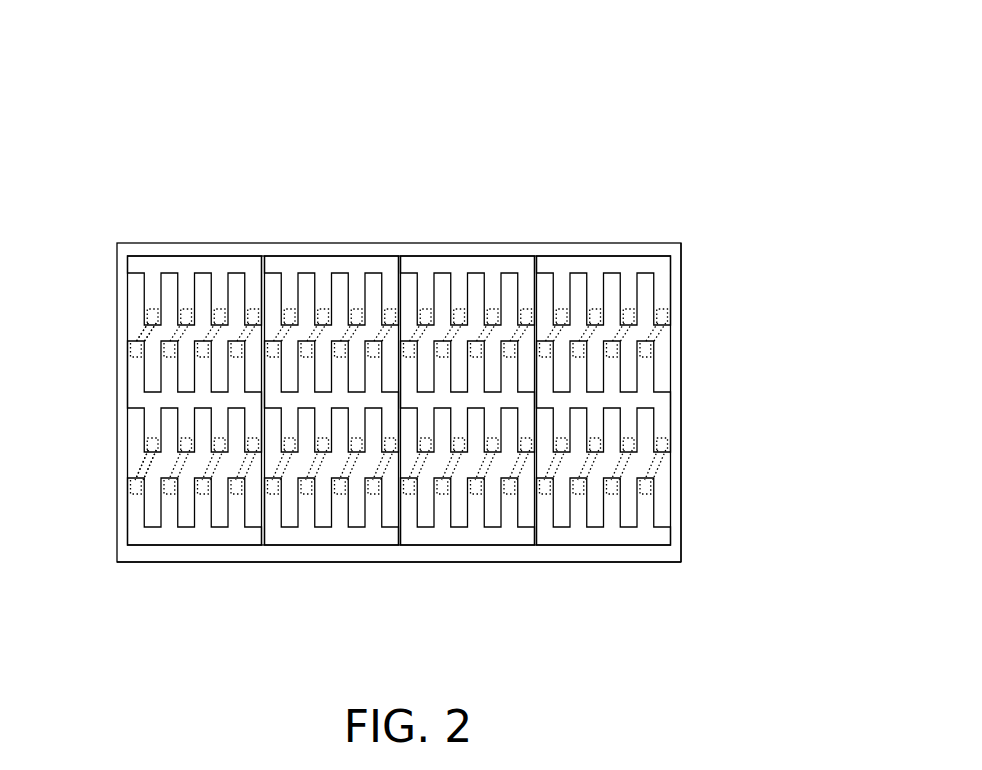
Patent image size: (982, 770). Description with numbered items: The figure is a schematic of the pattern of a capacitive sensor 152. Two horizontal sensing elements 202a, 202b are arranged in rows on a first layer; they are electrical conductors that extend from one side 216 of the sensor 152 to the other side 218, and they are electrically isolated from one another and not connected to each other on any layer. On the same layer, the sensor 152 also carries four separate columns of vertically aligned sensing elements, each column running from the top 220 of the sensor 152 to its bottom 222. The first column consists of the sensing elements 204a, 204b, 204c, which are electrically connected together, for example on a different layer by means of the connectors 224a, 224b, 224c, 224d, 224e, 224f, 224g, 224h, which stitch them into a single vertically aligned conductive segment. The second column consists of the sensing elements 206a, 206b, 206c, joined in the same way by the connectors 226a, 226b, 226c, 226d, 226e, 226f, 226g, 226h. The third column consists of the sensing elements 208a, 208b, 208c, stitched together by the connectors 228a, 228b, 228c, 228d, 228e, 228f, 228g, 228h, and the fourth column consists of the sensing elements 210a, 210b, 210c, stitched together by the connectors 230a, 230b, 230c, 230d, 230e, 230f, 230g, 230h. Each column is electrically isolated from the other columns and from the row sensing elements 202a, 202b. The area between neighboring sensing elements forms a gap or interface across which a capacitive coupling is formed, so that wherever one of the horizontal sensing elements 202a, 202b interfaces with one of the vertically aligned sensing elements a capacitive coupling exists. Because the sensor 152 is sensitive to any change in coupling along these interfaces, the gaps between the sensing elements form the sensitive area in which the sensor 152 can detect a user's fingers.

The sensor 152 is at (442, 86).
The sensing element 202a is at (136, 329).
The sensing element 202b is at (134, 466).
The sensing element 204a is at (195, 290).
The sensing element 204b is at (195, 396).
The sensing element 204c is at (195, 511).
The sensing element 206a is at (332, 290).
The sensing element 206b is at (332, 396).
The sensing element 206c is at (332, 511).
The sensing element 208a is at (468, 290).
The sensing element 208b is at (468, 396).
The sensing element 208c is at (468, 511).
The sensing element 210a is at (604, 290).
The sensing element 210b is at (604, 396).
The sensing element 210c is at (604, 511).
The side 216 is at (117, 382).
The other side 218 is at (681, 386).
The top 220 is at (128, 250).
The bottom 222 is at (672, 563).
The connector 224a is at (151, 316).
The connector 224b is at (185, 316).
The connector 224c is at (218, 316).
The connector 224d is at (252, 316).
The connector 224e is at (134, 486).
The connector 224f is at (168, 486).
The connector 224g is at (202, 486).
The connector 224h is at (235, 486).
The connector 226a is at (288, 316).
The connector 226b is at (322, 316).
The connector 226c is at (355, 316).
The connector 226d is at (389, 316).
The connector 226e is at (272, 486).
The connector 226f is at (305, 486).
The connector 226g is at (338, 486).
The connector 226h is at (372, 486).
The connector 228a is at (424, 316).
The connector 228b is at (458, 316).
The connector 228c is at (491, 316).
The connector 228d is at (525, 316).
The connector 228e is at (408, 486).
The connector 228f is at (441, 486).
The connector 228g is at (474, 486).
The connector 228h is at (508, 486).
The connector 230a is at (560, 316).
The connector 230b is at (594, 316).
The connector 230c is at (627, 316).
The connector 230d is at (661, 316).
The connector 230e is at (544, 486).
The connector 230f is at (577, 486).
The connector 230g is at (610, 486).
The connector 230h is at (644, 486).